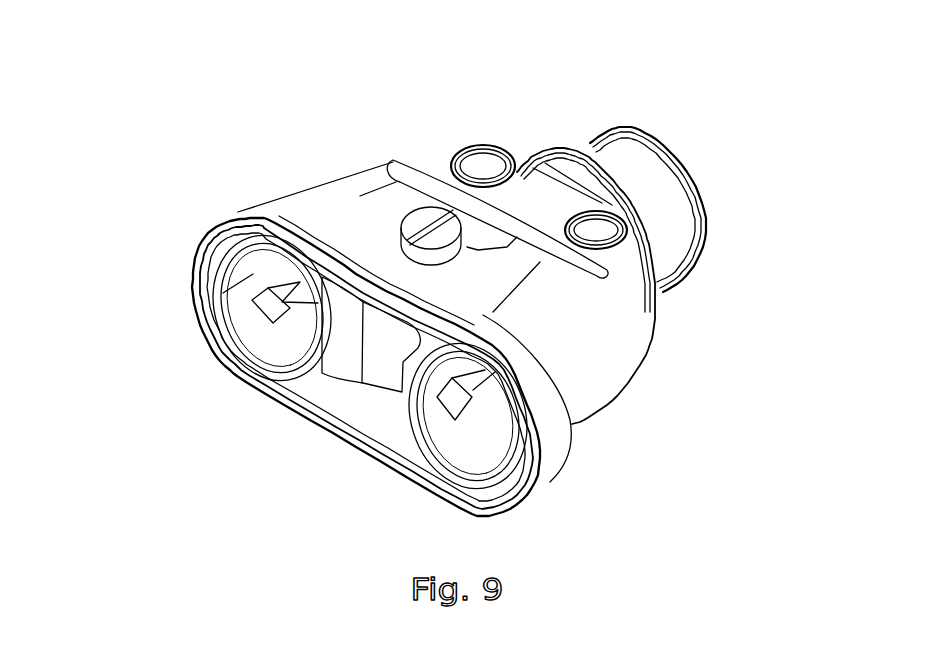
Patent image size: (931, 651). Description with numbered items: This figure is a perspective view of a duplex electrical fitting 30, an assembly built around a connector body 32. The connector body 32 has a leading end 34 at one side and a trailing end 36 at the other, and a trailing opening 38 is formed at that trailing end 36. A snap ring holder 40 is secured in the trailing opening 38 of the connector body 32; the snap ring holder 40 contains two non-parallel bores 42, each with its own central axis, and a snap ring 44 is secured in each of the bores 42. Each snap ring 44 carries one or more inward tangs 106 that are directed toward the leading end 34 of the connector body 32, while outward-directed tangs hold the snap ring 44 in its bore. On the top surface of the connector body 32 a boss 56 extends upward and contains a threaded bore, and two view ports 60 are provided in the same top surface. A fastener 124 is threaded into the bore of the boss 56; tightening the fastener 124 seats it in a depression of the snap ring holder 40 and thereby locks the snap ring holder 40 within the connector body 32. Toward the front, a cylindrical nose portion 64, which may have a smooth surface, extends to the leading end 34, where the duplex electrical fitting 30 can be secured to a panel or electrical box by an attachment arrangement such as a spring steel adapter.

The duplex electrical fitting 30 is at (147, 170).
The connector body 32 is at (572, 348).
The leading end 34 is at (657, 139).
The trailing end 36 is at (308, 422).
The trailing opening 38 is at (233, 258).
The snap ring holder 40 is at (380, 415).
The non-parallel bores 42 is at (282, 347).
The snap ring 44 is at (255, 273).
The boss 56 is at (437, 254).
The view ports 60 is at (478, 147).
The nose portion 64 is at (669, 230).
The inward tangs 106 is at (281, 297).
The fastener 124 is at (402, 188).